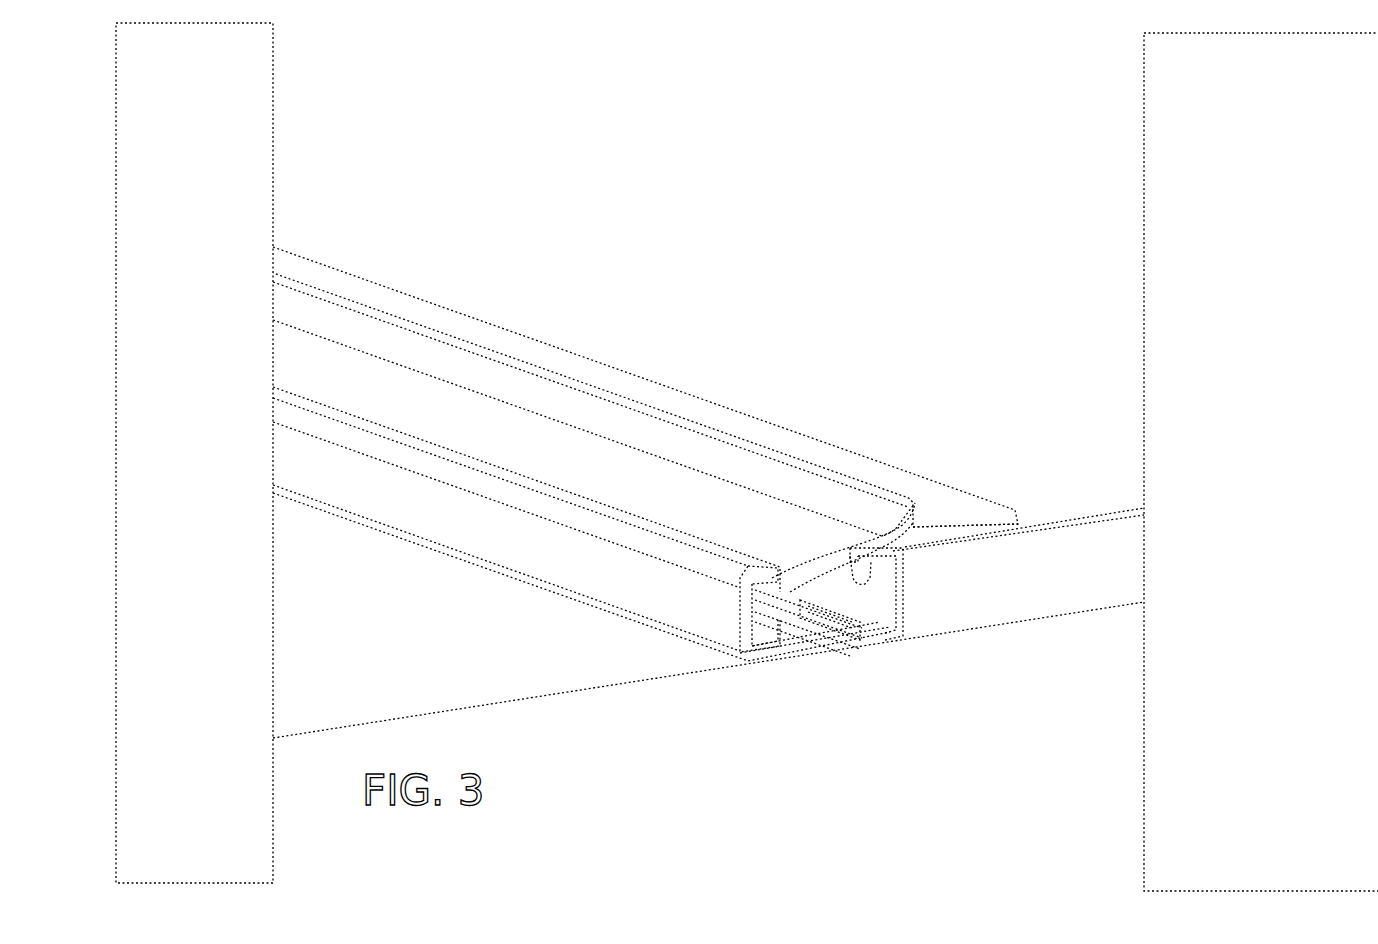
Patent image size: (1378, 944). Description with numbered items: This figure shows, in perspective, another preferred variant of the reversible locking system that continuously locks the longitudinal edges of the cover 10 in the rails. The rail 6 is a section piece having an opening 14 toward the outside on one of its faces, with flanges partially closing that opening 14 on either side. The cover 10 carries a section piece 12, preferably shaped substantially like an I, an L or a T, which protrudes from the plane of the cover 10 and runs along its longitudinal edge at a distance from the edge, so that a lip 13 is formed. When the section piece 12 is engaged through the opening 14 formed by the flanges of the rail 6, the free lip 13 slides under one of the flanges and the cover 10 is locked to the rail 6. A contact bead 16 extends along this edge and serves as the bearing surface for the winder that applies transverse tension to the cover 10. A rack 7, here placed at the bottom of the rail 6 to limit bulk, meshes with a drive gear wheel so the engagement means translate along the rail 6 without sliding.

The rail 6 is at (905, 598).
The rack 7 is at (832, 638).
The cover 10 is at (1103, 513).
The section piece 12 is at (905, 533).
The lip 13 is at (805, 570).
The opening 14 is at (732, 541).
The contact bead 16 is at (851, 483).